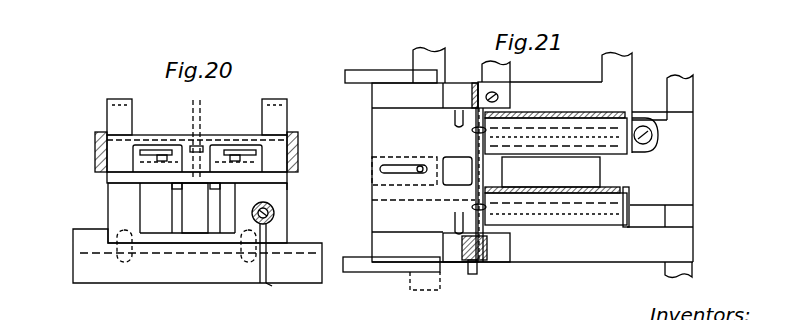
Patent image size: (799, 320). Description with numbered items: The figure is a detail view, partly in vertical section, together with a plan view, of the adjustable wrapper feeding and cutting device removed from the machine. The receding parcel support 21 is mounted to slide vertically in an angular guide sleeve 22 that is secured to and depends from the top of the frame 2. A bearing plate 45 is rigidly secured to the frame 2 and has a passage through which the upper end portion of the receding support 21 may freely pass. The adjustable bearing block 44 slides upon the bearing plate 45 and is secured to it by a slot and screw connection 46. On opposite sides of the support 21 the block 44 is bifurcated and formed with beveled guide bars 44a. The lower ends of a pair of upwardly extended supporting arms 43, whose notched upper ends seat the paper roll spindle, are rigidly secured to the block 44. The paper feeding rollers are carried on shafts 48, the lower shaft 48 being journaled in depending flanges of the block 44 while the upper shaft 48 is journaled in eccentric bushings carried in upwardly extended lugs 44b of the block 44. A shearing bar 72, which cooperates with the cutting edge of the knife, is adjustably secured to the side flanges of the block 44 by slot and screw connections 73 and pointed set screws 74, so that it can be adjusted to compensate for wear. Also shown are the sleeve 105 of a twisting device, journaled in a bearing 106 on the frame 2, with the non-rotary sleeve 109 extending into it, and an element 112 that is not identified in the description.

In FIG. 20, the frame 2 is at (236, 270).
In FIG. 21, the frame 2 is at (438, 64).
In FIG. 20, the receding parcel support 21 is at (192, 208).
In FIG. 21, the receding parcel support 21 is at (628, 162).
In FIG. 20, the angular guide sleeve 22 is at (176, 238).
In FIG. 21, the angular guide sleeve 22 is at (680, 180).
In FIG. 20, the supporting arms 43 is at (97, 151).
In FIG. 21, the supporting arms 43 is at (368, 74).
In FIG. 20, the adjustable bearing block 44 is at (128, 148).
In FIG. 21, the adjustable bearing block 44 is at (392, 207).
In FIG. 21, the beveled guide bars 44a is at (597, 136).
In FIG. 20, the upwardly extended lugs 44b is at (122, 120).
In FIG. 21, the upwardly extended lugs 44b is at (455, 115).
In FIG. 20, the bearing plate 45 is at (173, 187).
In FIG. 21, the bearing plate 45 is at (633, 118).
In FIG. 20, the slot and screw connection 46 is at (196, 140).
In FIG. 21, the slot and screw connection 46 is at (395, 182).
In FIG. 21, the shafts 48 is at (460, 258).
In FIG. 21, the shearing bar 72 is at (590, 170).
In FIG. 20, the slot and screw connections 73 is at (200, 152).
In FIG. 21, the slot and screw connections 73 is at (478, 130).
In FIG. 20, the pointed set screws 74 is at (132, 105).
In FIG. 21, the pointed set screws 74 is at (487, 258).
In FIG. 20, the sleeve 105 is at (273, 209).
In FIG. 20, the bearing 106 is at (284, 189).
In FIG. 20, the non-rotary sleeve 109 is at (281, 253).
In FIG. 20, the pin 112 is at (263, 284).